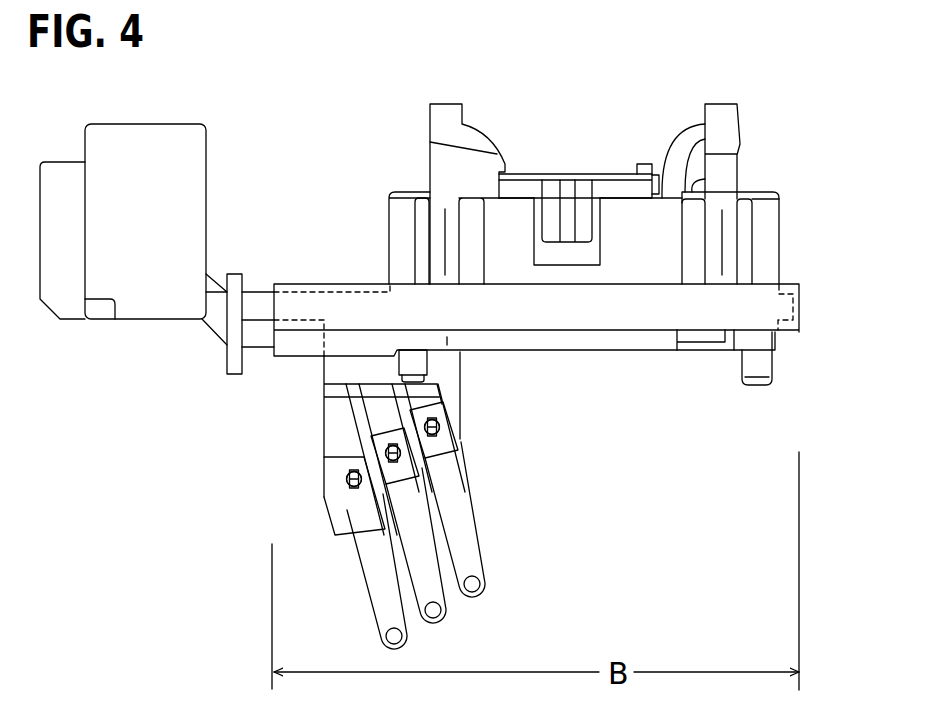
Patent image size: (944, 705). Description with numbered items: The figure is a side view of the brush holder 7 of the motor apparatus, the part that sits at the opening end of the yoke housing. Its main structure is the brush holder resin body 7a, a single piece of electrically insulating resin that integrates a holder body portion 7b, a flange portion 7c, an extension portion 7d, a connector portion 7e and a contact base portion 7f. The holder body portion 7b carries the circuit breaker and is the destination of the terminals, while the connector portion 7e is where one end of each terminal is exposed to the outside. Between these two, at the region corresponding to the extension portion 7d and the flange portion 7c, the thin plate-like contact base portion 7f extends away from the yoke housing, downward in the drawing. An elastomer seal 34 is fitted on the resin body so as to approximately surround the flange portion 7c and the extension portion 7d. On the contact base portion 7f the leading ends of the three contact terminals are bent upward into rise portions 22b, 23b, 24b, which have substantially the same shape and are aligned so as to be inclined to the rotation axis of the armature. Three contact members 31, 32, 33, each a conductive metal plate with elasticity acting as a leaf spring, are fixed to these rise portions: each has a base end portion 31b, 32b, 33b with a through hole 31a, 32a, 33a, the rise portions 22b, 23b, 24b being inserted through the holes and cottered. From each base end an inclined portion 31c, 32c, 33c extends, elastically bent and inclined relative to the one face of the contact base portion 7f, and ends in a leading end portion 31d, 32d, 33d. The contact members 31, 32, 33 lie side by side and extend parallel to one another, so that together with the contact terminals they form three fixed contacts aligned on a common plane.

The brush holder 7 is at (757, 138).
The brush holder resin body 7a is at (780, 207).
The holder body portion 7b is at (428, 160).
The flange portion 7c is at (348, 281).
The extension portion 7d is at (253, 295).
The connector portion 7e is at (197, 157).
The contact base portion 7f is at (458, 398).
The rise portion 22b is at (443, 402).
The rise portion 23b is at (386, 449).
The rise portion 24b is at (347, 495).
The contact member 31 is at (468, 512).
The through hole 31a is at (440, 425).
The base end portion 31b is at (438, 435).
The inclined portion 31c is at (455, 493).
The leading end portion 31d is at (472, 592).
The contact member 32 is at (427, 537).
The through hole 32a is at (420, 453).
The base end portion 32b is at (385, 430).
The inclined portion 32c is at (430, 560).
The leading end portion 32d is at (433, 618).
The contact member 33 is at (355, 553).
The through hole 33a is at (347, 478).
The base end portion 33b is at (350, 457).
The inclined portion 33c is at (370, 583).
The leading end portion 33d is at (382, 637).
The seal 34 is at (608, 318).